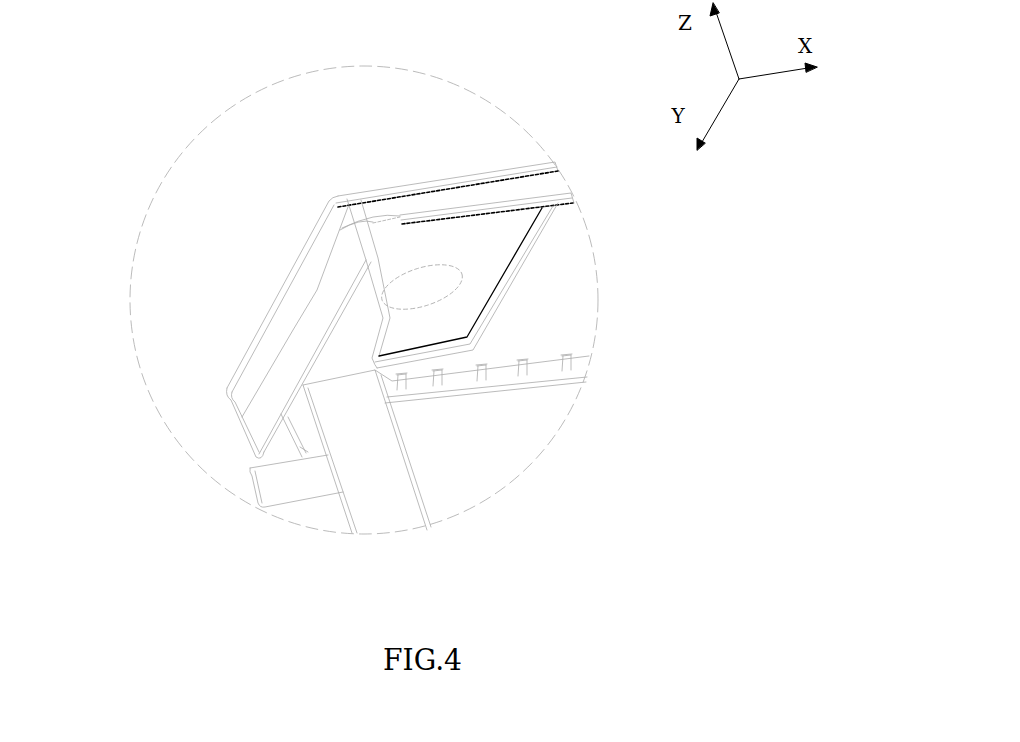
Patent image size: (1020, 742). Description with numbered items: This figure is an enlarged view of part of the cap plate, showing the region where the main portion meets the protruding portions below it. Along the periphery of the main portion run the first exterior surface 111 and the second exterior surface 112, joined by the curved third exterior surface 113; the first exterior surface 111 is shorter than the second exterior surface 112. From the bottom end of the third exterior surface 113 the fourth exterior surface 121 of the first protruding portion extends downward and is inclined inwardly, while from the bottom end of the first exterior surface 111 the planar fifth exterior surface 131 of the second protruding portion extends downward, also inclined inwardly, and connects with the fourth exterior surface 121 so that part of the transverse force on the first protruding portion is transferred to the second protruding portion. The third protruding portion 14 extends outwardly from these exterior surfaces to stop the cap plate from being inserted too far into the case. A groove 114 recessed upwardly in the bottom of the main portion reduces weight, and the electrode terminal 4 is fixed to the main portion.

The third protruding portion 14 is at (266, 312).
The first exterior surface 111 is at (322, 252).
The second exterior surface 112 is at (458, 192).
The third exterior surface 113 is at (353, 212).
The groove 114 is at (558, 315).
The fourth exterior surface 121 is at (362, 240).
The fifth exterior surface 131 is at (263, 447).
The electrode terminal 4 is at (433, 285).